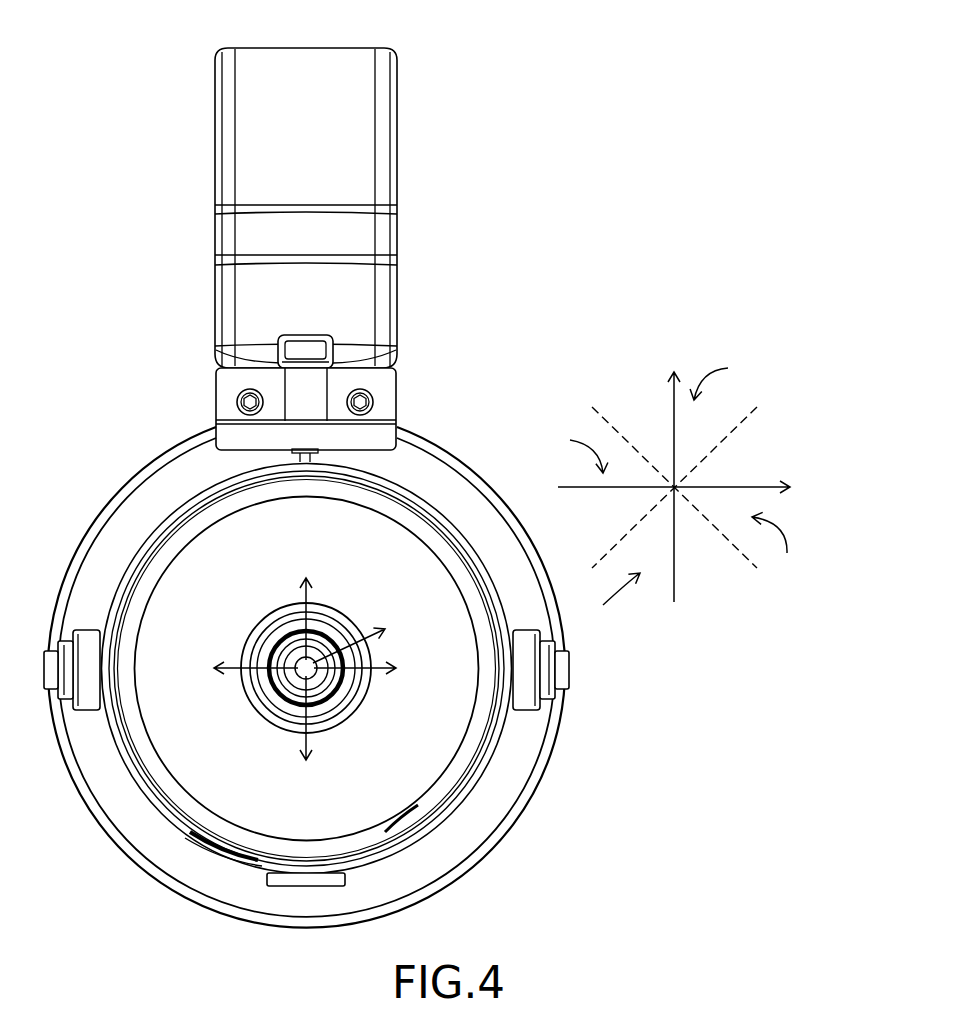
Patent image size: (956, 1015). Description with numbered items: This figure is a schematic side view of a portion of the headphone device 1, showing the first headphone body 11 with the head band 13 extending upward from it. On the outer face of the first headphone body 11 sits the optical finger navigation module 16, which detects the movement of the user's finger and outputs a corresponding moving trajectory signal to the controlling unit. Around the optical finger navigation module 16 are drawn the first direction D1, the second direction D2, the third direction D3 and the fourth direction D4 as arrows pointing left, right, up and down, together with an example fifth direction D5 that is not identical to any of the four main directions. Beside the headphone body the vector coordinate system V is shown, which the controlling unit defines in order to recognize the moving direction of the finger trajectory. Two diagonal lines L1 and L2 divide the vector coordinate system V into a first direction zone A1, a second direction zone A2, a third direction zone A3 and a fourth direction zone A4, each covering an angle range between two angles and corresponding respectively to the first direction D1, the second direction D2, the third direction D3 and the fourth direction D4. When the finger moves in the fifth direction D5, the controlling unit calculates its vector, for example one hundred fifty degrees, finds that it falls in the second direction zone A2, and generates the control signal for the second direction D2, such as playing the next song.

The headphone device 1 is at (306, 474).
The first headphone body 11 is at (195, 573).
The head band 13 is at (325, 63).
The optical finger navigation module 16 is at (318, 680).
The first direction D1 is at (237, 669).
The second direction D2 is at (372, 669).
The third direction D3 is at (302, 606).
The fourth direction D4 is at (302, 734).
The fifth direction D5 is at (367, 640).
The first direction zone A1 is at (571, 450).
The second direction zone A2 is at (775, 546).
The third direction zone A3 is at (725, 377).
The fourth direction zone A4 is at (614, 605).
The diagonal line L1 is at (666, 475).
The diagonal line L2 is at (680, 475).
The vector coordinate system V is at (724, 319).